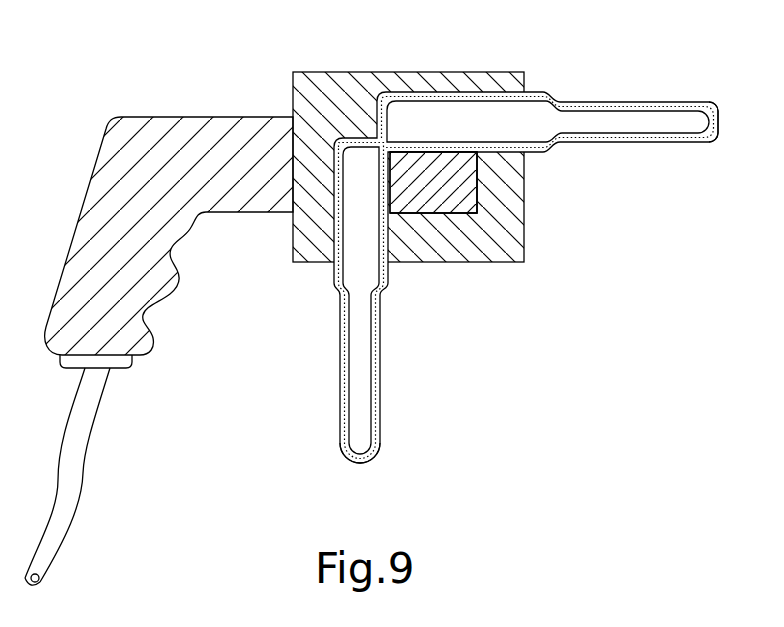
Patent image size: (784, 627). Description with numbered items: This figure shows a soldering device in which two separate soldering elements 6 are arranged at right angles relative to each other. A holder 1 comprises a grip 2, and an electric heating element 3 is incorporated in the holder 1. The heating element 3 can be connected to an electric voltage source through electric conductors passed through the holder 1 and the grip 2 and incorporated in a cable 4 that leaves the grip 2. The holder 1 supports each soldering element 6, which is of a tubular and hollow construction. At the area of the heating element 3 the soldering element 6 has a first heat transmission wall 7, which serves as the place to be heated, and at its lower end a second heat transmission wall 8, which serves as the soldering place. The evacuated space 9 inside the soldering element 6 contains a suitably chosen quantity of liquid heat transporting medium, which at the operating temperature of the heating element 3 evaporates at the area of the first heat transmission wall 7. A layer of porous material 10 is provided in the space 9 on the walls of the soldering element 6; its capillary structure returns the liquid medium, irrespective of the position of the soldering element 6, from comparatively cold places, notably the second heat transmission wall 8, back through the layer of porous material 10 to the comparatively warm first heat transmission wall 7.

The holder 1 is at (508, 210).
The grip 2 is at (247, 197).
The electric heating element 3 is at (506, 287).
The cable 4 is at (73, 442).
The soldering element 6 is at (364, 137).
The first heat transmission wall 7 is at (458, 153).
The second heat transmission wall 8 is at (716, 128).
The evacuated space 9 is at (504, 130).
The layer of porous material 10 is at (402, 142).